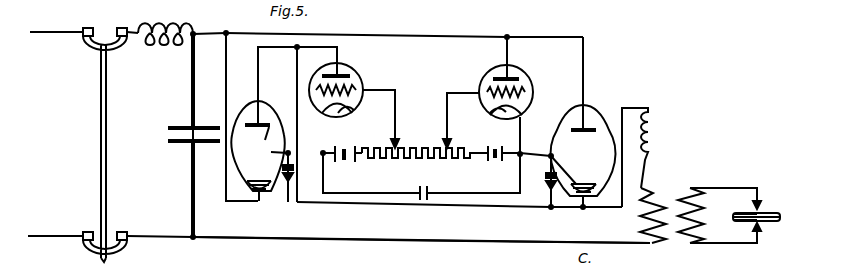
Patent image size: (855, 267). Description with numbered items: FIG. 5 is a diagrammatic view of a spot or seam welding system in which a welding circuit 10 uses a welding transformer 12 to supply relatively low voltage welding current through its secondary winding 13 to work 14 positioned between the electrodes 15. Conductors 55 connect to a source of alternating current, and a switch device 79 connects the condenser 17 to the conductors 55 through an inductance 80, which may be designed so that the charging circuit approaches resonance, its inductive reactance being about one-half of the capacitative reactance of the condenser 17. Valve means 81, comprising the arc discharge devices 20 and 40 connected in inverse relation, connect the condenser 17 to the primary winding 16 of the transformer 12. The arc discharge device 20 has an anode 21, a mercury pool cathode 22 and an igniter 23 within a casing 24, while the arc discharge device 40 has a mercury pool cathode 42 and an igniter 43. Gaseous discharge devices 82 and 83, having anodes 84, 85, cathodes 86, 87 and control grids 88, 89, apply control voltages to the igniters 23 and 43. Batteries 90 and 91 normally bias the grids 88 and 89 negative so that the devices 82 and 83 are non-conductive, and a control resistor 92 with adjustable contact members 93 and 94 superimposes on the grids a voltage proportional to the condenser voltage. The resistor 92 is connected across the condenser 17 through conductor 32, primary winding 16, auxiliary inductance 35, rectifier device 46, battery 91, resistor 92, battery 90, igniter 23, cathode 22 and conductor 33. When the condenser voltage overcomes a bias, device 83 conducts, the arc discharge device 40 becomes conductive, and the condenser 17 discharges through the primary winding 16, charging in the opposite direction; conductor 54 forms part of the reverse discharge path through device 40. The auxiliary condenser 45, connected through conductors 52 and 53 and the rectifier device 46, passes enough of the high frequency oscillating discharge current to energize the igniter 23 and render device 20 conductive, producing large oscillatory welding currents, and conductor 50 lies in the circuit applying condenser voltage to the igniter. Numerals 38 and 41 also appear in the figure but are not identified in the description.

The welding circuit 10 is at (711, 181).
The welding transformer 12 is at (720, 218).
The secondary winding 13 is at (692, 246).
The work 14 is at (770, 214).
The electrodes 15 is at (762, 205).
The primary winding 16 is at (655, 245).
The condenser 17 is at (186, 127).
The arc discharge device 20 is at (264, 140).
The anode 21 is at (255, 141).
The mercury pool cathode 22 is at (266, 188).
The igniter 23 is at (276, 175).
The casing 24 is at (264, 108).
The conductor 32 is at (420, 243).
The conductor 33 is at (227, 73).
The auxiliary inductance 35 is at (652, 136).
The conductor 38 is at (712, 0).
The arc discharge device 40 is at (585, 134).
The anode 41 is at (587, 135).
The mercury pool cathode 42 is at (588, 208).
The igniter 43 is at (572, 180).
The auxiliary condenser 45 is at (436, 178).
The rectifier device 46 is at (294, 166).
The conductor 50 is at (493, 209).
The conductor 52 is at (394, 194).
The conductor 53 is at (484, 196).
The conductor 54 is at (419, 36).
The conductors 55 is at (60, 36).
The switch device 79 is at (100, 134).
The inductance 80 is at (170, 37).
The valve means 81 is at (425, 91).
The gaseous discharge device 82 is at (351, 92).
The gaseous discharge device 83 is at (504, 87).
The anode 84 is at (320, 72).
The anode 85 is at (498, 74).
The cathode 86 is at (352, 106).
The cathode 87 is at (487, 110).
The control grid 88 is at (354, 91).
The control grid 89 is at (526, 90).
The battery 90 is at (346, 165).
The battery 91 is at (498, 165).
The control resistor 92 is at (418, 161).
The adjustable contact member 93 is at (398, 144).
The adjustable contact member 94 is at (450, 144).